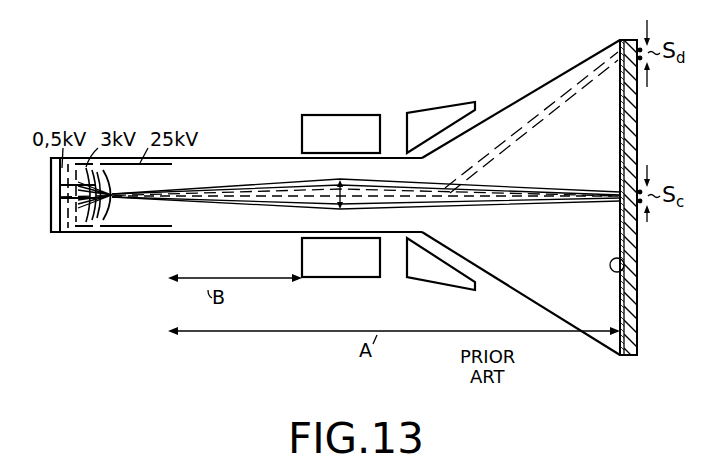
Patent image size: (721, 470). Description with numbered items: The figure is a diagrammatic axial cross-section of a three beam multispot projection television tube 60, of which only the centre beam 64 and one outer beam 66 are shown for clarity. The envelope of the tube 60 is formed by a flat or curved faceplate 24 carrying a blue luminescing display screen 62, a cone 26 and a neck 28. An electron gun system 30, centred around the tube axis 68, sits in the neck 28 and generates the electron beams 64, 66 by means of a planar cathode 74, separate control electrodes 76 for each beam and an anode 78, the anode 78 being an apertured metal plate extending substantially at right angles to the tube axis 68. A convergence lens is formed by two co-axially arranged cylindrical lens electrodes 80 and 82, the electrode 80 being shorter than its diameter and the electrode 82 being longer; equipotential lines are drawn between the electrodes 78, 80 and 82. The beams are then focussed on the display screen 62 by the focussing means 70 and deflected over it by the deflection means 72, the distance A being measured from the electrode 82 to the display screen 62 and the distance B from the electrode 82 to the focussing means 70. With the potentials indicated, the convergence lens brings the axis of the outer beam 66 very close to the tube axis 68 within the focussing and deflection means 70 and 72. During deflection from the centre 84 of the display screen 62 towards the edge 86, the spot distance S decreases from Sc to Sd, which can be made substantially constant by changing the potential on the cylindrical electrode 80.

The faceplate 24 is at (634, 133).
The cone 26 is at (533, 92).
The neck 28 is at (283, 158).
The electron gun system 30 is at (110, 228).
The multispot projection television tube 60 is at (518, 298).
The display screen 62 is at (624, 270).
The centre electron beam 64 is at (198, 208).
The outer electron beam 66 is at (200, 183).
The tube axis 68 is at (286, 203).
The focussing means 70 is at (340, 278).
The deflection means 72 is at (437, 276).
The planar cathode 74 is at (58, 230).
The control electrodes 76 is at (66, 225).
The anode 78 is at (76, 232).
The first cylindrical lens electrode 80 is at (92, 228).
The second cylindrical lens electrode 82 is at (151, 230).
The centre of the display screen 84 is at (612, 185).
The edge of the display screen 86 is at (614, 74).